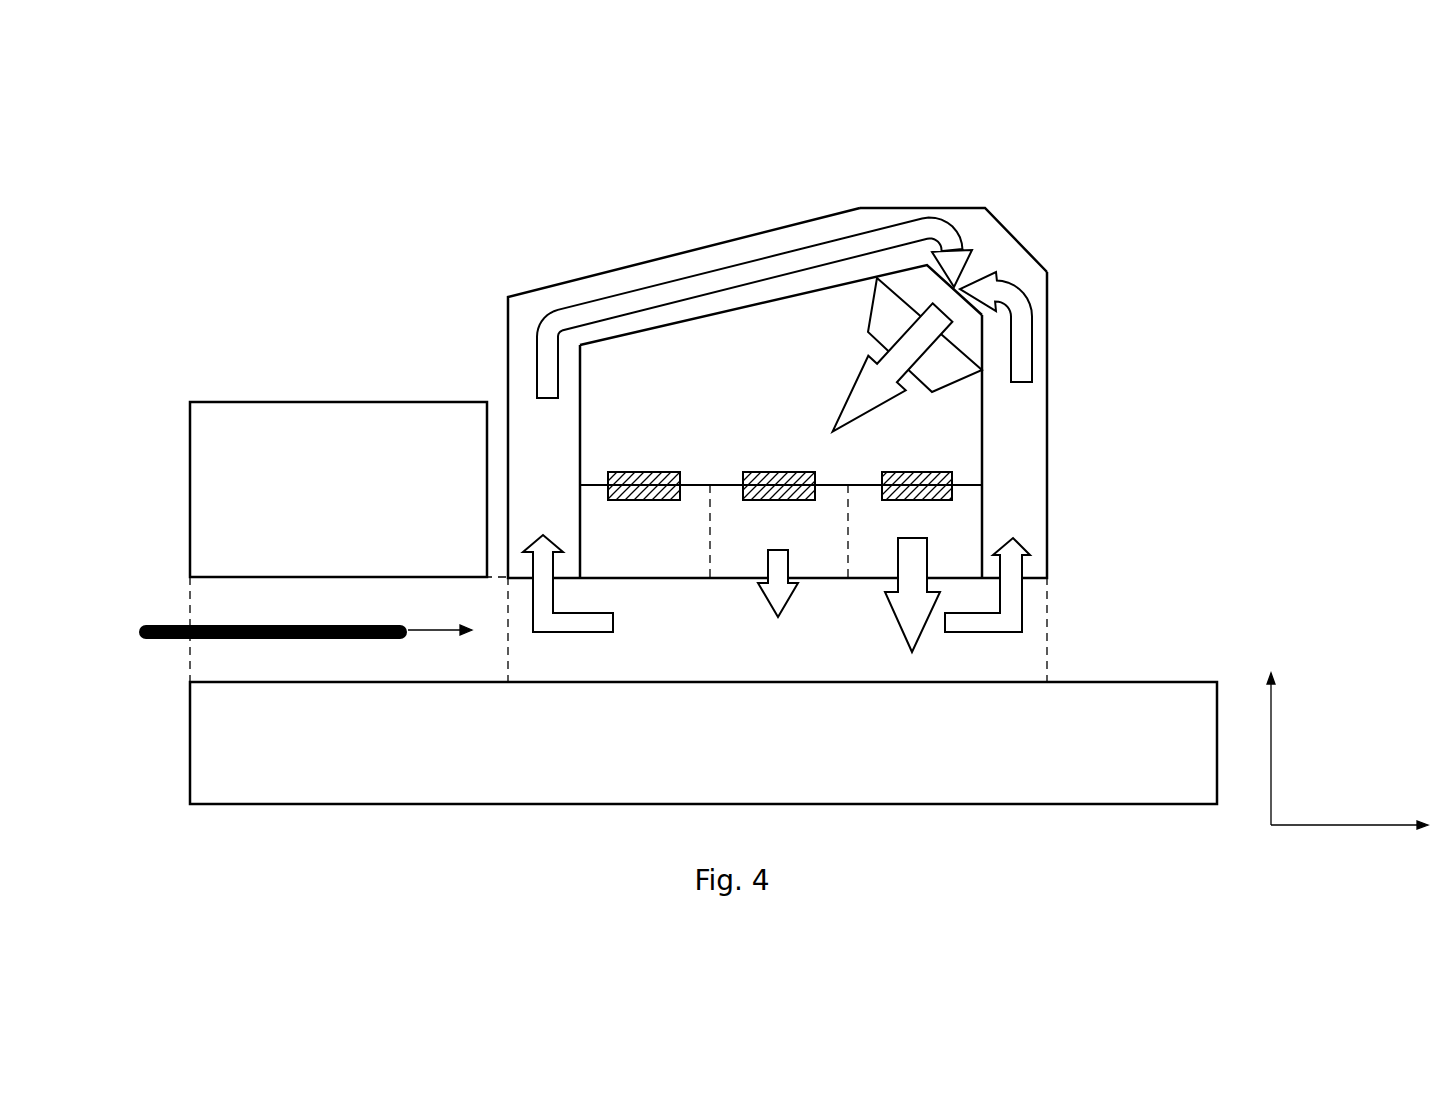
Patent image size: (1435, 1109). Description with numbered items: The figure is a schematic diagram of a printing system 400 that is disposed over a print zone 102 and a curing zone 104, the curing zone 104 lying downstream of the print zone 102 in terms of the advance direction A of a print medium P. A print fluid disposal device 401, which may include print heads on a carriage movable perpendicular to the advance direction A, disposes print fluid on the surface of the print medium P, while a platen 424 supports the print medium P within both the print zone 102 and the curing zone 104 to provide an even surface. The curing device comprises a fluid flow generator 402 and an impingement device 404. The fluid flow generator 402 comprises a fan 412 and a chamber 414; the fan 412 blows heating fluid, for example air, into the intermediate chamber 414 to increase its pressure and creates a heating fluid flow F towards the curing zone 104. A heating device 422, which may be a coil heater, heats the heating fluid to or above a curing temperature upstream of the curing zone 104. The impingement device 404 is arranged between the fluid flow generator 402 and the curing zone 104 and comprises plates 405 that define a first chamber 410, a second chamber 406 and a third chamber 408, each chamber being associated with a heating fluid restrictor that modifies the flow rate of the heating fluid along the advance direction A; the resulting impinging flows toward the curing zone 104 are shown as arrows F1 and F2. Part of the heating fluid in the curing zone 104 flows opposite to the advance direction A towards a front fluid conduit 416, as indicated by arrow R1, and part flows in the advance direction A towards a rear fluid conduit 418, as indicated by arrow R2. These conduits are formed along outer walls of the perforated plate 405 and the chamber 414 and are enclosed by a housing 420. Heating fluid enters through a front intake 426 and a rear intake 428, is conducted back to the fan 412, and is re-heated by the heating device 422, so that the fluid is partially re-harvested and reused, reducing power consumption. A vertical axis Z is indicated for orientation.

The printing system 400 is at (385, 258).
The print fluid disposal device 401 is at (319, 502).
The fluid flow generator 402 is at (1225, 354).
The impingement device 404 is at (955, 533).
The plates 405 is at (998, 490).
The second chamber 406 is at (761, 532).
The third chamber 408 is at (896, 532).
The first chamber 410 is at (626, 532).
The fan 412 is at (975, 333).
The chamber 414 is at (945, 410).
The front fluid conduit 416 is at (763, 247).
The rear fluid conduit 418 is at (1018, 452).
The housing 420 is at (1011, 230).
The heating device 422 is at (880, 333).
The platen 424 is at (641, 761).
The front intake 426 is at (520, 578).
The rear intake 428 is at (1040, 600).
The print zone 102 is at (237, 657).
The curing zone 104 is at (662, 637).
The print medium P is at (152, 624).
The advance direction A is at (437, 632).
The arrow R1 is at (643, 293).
The arrow R2 is at (1025, 300).
The heating fluid flow F is at (920, 318).
The air flow F1 is at (760, 607).
The air flow F2 is at (890, 620).
The vertical axis Z is at (1345, 733).